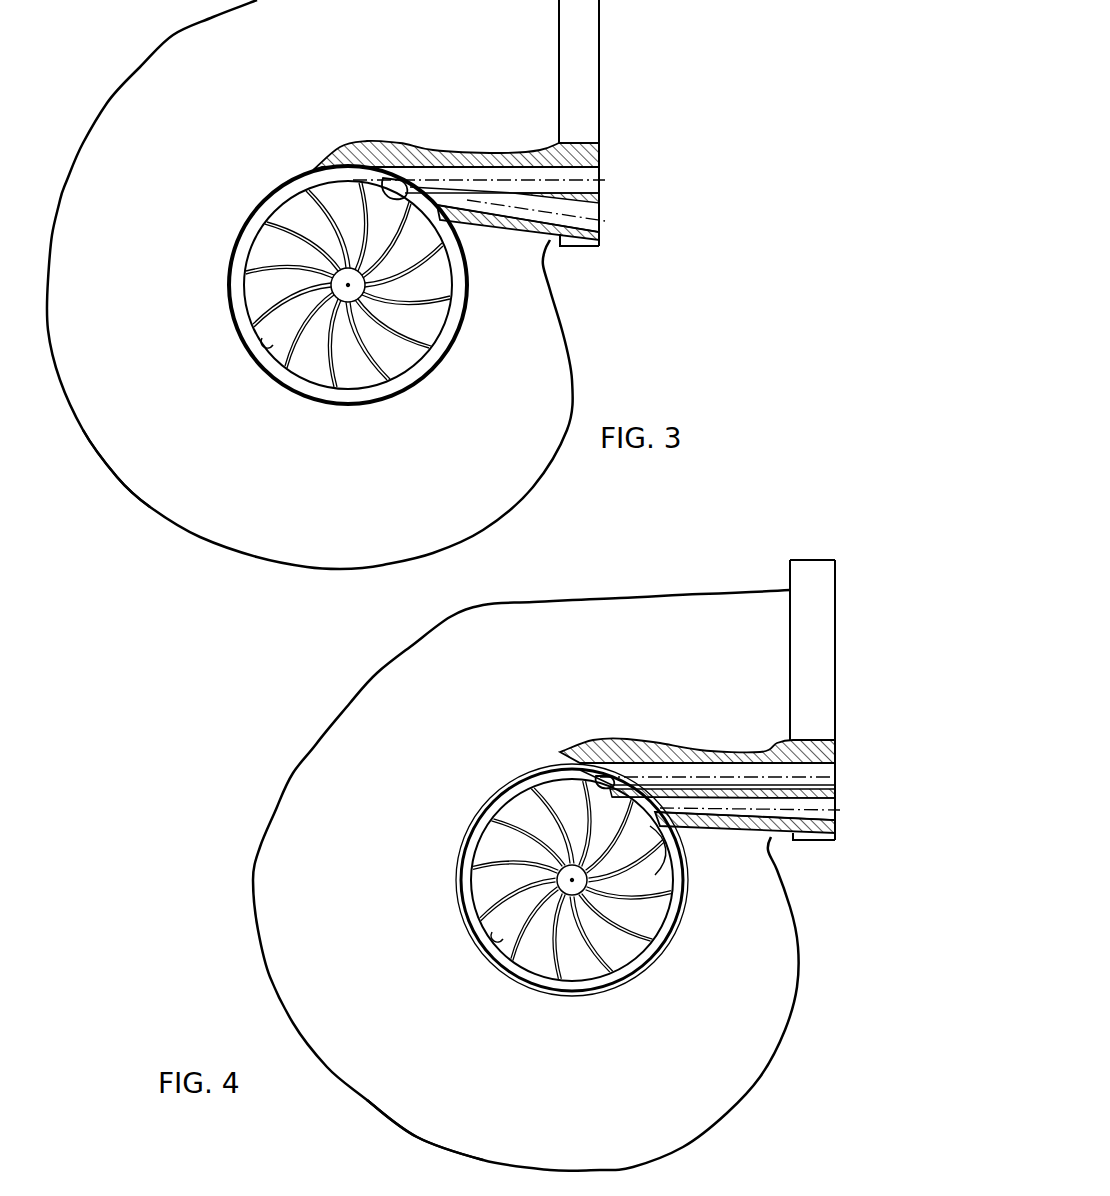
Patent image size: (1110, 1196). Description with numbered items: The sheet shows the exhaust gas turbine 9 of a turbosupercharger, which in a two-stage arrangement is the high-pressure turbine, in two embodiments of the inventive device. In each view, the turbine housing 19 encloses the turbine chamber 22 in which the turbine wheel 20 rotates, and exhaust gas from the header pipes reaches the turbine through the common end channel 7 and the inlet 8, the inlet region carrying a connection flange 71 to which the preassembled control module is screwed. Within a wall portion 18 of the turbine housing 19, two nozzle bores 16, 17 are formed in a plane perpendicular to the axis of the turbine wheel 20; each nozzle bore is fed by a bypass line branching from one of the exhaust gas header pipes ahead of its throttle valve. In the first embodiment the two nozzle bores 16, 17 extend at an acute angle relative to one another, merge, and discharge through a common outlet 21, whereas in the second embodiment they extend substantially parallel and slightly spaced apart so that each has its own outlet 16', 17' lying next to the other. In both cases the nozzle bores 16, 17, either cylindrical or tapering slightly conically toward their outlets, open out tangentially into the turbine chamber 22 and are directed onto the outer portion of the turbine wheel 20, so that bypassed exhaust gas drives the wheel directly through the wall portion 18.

In FIG. 3, the exhaust gas turbine 9 is at (104, 106).
In FIG. 4, the exhaust gas turbine 9 is at (292, 761).
In FIG. 3, the common end channel 7 is at (583, 58).
In FIG. 3, the inlet 8 is at (627, 58).
In FIG. 3, the connection flange 71 is at (603, 123).
In FIG. 4, the connection flange 71 is at (836, 558).
In FIG. 3, the nozzle bore 16 is at (489, 172).
In FIG. 4, the nozzle bore 16 is at (710, 733).
In FIG. 4, the outlet 16' is at (617, 733).
In FIG. 3, the nozzle bore 17 is at (533, 209).
In FIG. 4, the nozzle bore 17 is at (726, 848).
In FIG. 4, the outlet 17' is at (692, 862).
In FIG. 3, the wall portion 18 is at (513, 237).
In FIG. 4, the wall portion 18 is at (670, 752).
In FIG. 3, the turbine housing 19 is at (113, 475).
In FIG. 4, the turbine housing 19 is at (417, 1148).
In FIG. 3, the turbine wheel 20 is at (342, 370).
In FIG. 4, the turbine wheel 20 is at (578, 970).
In FIG. 3, the common outlet 21 is at (388, 178).
In FIG. 4, the common outlet 21 is at (607, 775).
In FIG. 3, the turbine chamber 22 is at (266, 342).
In FIG. 4, the turbine chamber 22 is at (497, 937).